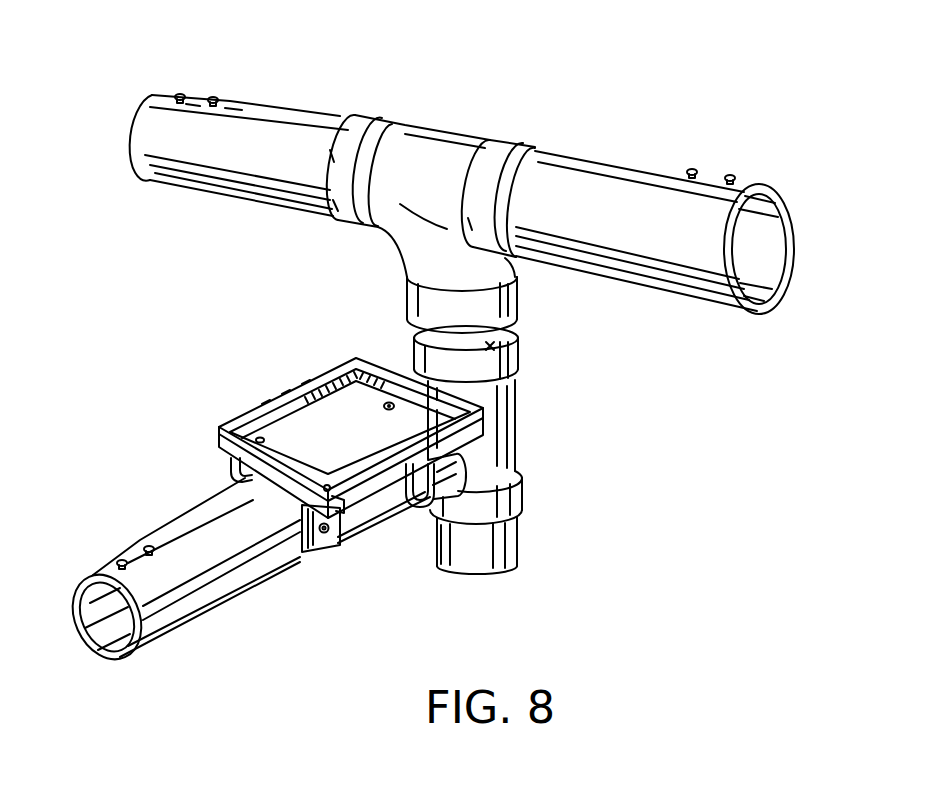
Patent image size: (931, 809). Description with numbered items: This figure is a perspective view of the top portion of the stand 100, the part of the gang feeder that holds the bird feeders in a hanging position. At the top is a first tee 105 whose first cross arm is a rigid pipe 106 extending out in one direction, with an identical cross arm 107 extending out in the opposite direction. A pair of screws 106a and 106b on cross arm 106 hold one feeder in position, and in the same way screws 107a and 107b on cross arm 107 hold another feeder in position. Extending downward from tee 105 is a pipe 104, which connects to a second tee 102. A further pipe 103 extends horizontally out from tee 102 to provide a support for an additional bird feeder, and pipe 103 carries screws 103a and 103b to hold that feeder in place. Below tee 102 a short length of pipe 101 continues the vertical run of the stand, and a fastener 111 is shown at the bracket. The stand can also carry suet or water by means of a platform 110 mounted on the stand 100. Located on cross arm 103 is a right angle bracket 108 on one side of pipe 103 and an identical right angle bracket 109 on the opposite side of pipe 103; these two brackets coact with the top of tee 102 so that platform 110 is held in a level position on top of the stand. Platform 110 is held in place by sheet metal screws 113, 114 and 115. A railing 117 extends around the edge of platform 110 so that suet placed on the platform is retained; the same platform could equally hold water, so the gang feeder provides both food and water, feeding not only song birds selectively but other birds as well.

The stand 100 is at (600, 477).
The lower vertical pipe 101 is at (509, 551).
The second tee 102 is at (509, 405).
The pipe 103 is at (175, 628).
The screw 103a is at (119, 560).
The screw 103b is at (148, 546).
The pipe 104 is at (496, 345).
The first tee 105 is at (402, 233).
The rigid pipe 106 is at (318, 133).
The screw 106a is at (178, 94).
The screw 106b is at (215, 97).
The cross arm 107 is at (703, 278).
The screw 107a is at (734, 177).
The screw 107b is at (697, 170).
The right angle bracket 108 is at (346, 555).
The right angle bracket 109 is at (229, 465).
The platform 110 is at (343, 403).
The bracket fastener 111 is at (330, 532).
The sheet metal screw 113 is at (233, 398).
The sheet metal screw 114 is at (330, 486).
The sheet metal screw 115 is at (392, 402).
The railing 117 is at (350, 372).